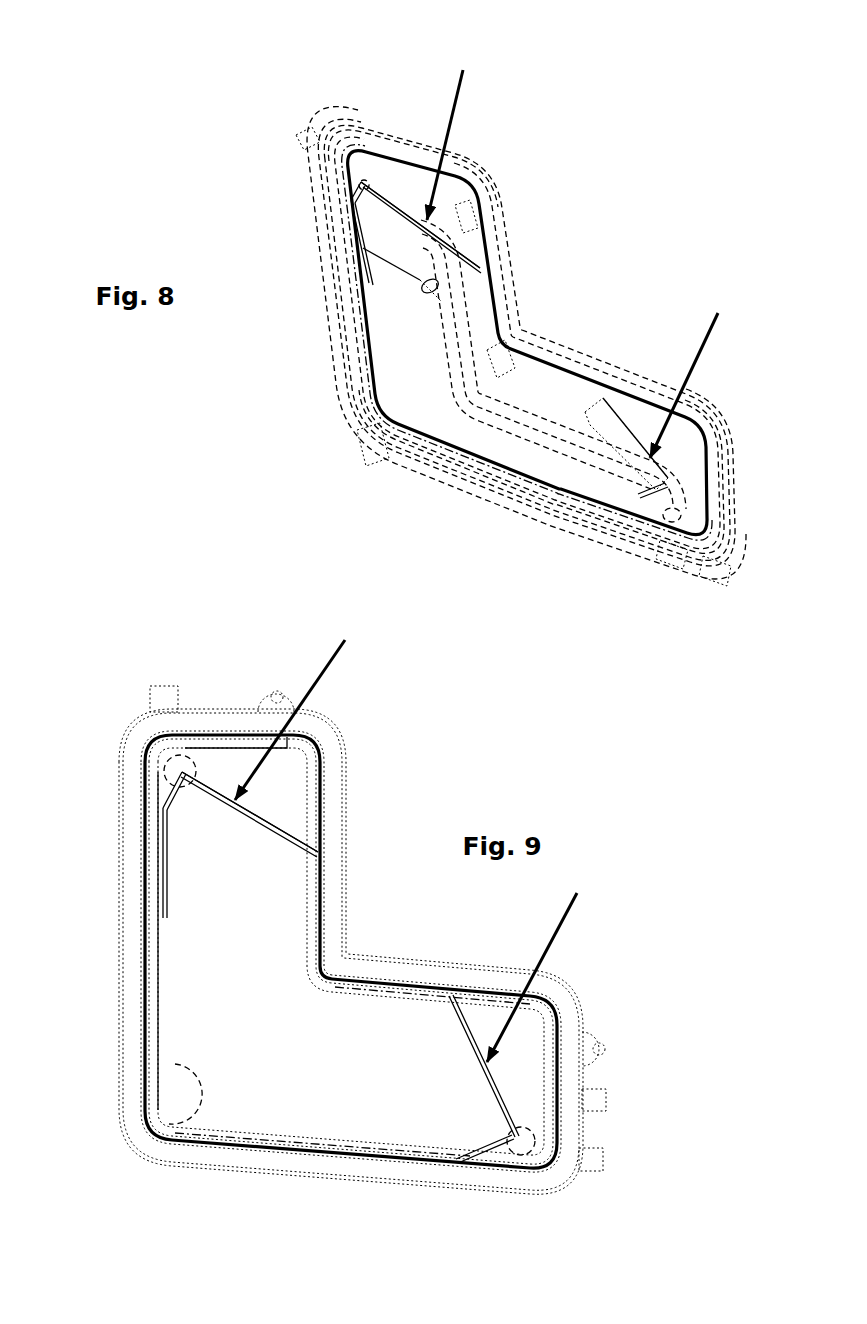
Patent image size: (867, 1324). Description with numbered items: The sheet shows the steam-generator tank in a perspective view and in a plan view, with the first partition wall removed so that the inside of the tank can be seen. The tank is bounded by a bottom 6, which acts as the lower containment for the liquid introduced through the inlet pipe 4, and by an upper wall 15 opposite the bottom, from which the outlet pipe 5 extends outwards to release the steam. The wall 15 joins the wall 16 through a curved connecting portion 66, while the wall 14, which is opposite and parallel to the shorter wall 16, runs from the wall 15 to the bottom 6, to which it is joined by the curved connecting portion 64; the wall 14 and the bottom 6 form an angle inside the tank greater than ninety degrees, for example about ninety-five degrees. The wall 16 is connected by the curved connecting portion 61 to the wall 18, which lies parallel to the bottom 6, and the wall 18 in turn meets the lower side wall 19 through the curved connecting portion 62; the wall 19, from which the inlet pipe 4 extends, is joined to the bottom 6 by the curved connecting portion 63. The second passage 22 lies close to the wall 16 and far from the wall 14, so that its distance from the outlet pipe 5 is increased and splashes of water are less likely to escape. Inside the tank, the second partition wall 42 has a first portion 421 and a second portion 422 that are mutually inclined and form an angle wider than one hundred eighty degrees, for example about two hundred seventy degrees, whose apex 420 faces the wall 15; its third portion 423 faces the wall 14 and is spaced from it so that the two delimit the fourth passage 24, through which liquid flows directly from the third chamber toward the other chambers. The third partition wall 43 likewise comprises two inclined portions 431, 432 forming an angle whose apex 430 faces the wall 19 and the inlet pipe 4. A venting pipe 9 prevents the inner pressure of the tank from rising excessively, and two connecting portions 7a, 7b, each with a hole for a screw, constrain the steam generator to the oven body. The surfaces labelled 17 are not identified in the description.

In FIG. 8, the inlet pipe 4 is at (718, 578).
In FIG. 9, the inlet pipe 4 is at (588, 1153).
In FIG. 8, the outlet pipe 5 is at (305, 136).
In FIG. 9, the outlet pipe 5 is at (157, 700).
In FIG. 8, the bottom 6 is at (528, 510).
In FIG. 9, the bottom 6 is at (212, 1145).
In FIG. 9, the connecting portion 7a is at (285, 697).
In FIG. 9, the connecting portion 7b is at (608, 1047).
In FIG. 9, the venting pipe 9 is at (600, 1100).
In FIG. 8, the wall 14 is at (340, 342).
In FIG. 9, the wall 14 is at (145, 1020).
In FIG. 8, the wall 15 is at (393, 173).
In FIG. 8, the wall 16 is at (478, 312).
In FIG. 8, the seal surface 17 is at (538, 450).
In FIG. 9, the seal surface 17 is at (222, 777).
In FIG. 8, the wall 18 is at (582, 403).
In FIG. 8, the wall 19 is at (690, 502).
In FIG. 8, the second passage 22 is at (434, 283).
In FIG. 9, the fourth passage 24 is at (155, 900).
In FIG. 8, the second partition wall 42 is at (422, 156).
In FIG. 9, the second partition wall 42 is at (278, 739).
In FIG. 8, the third partition wall 43 is at (660, 384).
In FIG. 9, the third partition wall 43 is at (539, 963).
In FIG. 8, the connecting portion 61 is at (512, 368).
In FIG. 8, the connecting portion 62 is at (683, 455).
In FIG. 8, the connecting portion 63 is at (668, 562).
In FIG. 8, the connecting portion 64 is at (363, 443).
In FIG. 8, the connecting portion 66 is at (463, 207).
In FIG. 8, the apex 420 is at (358, 182).
In FIG. 9, the apex 420 is at (182, 768).
In FIG. 8, the first portion 421 is at (395, 232).
In FIG. 9, the first portion 421 is at (257, 813).
In FIG. 8, the second portion 422 is at (348, 193).
In FIG. 9, the second portion 422 is at (168, 795).
In FIG. 8, the third portion 423 is at (360, 237).
In FIG. 9, the third portion 423 is at (162, 845).
In FIG. 8, the apex 430 is at (674, 517).
In FIG. 9, the apex 430 is at (520, 1142).
In FIG. 8, the portion 431 is at (625, 448).
In FIG. 9, the portion 431 is at (470, 1038).
In FIG. 8, the portion 432 is at (662, 520).
In FIG. 9, the portion 432 is at (480, 1153).